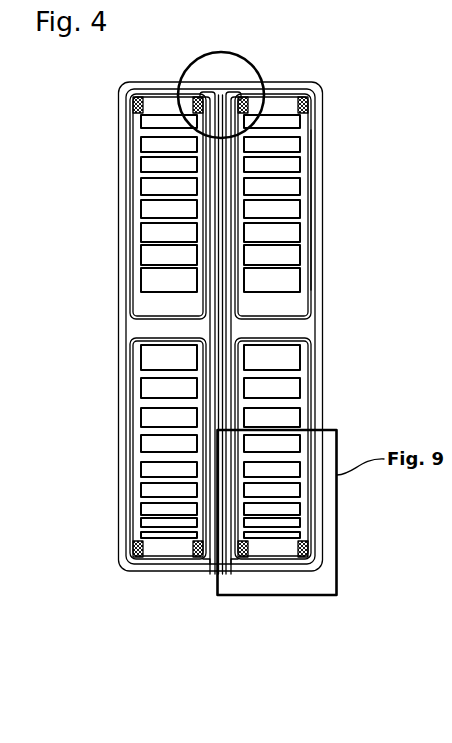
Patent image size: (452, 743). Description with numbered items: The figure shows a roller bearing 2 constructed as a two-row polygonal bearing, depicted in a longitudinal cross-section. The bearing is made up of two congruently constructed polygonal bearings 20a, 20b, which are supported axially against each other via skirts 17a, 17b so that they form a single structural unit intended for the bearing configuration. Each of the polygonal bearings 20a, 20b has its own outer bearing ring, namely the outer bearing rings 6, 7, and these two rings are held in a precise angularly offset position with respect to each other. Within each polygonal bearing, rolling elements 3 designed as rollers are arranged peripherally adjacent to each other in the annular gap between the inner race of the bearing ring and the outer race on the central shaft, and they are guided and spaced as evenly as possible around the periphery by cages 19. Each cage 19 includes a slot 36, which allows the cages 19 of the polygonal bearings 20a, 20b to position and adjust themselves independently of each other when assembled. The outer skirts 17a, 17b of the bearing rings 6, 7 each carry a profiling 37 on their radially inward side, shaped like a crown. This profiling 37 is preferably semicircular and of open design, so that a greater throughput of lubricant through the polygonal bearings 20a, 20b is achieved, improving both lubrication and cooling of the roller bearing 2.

The roller bearing 2 is at (223, 53).
The rolling elements 3 is at (283, 211).
The bearing ring 6 is at (142, 82).
The bearing ring 7 is at (289, 82).
The skirt 17a is at (131, 546).
The skirt 17b is at (312, 548).
The cage 19 is at (300, 248).
The polygonal bearing 20a is at (160, 579).
The polygonal bearing 20b is at (276, 580).
The slot 36 is at (143, 327).
The profiling 37 is at (119, 185).